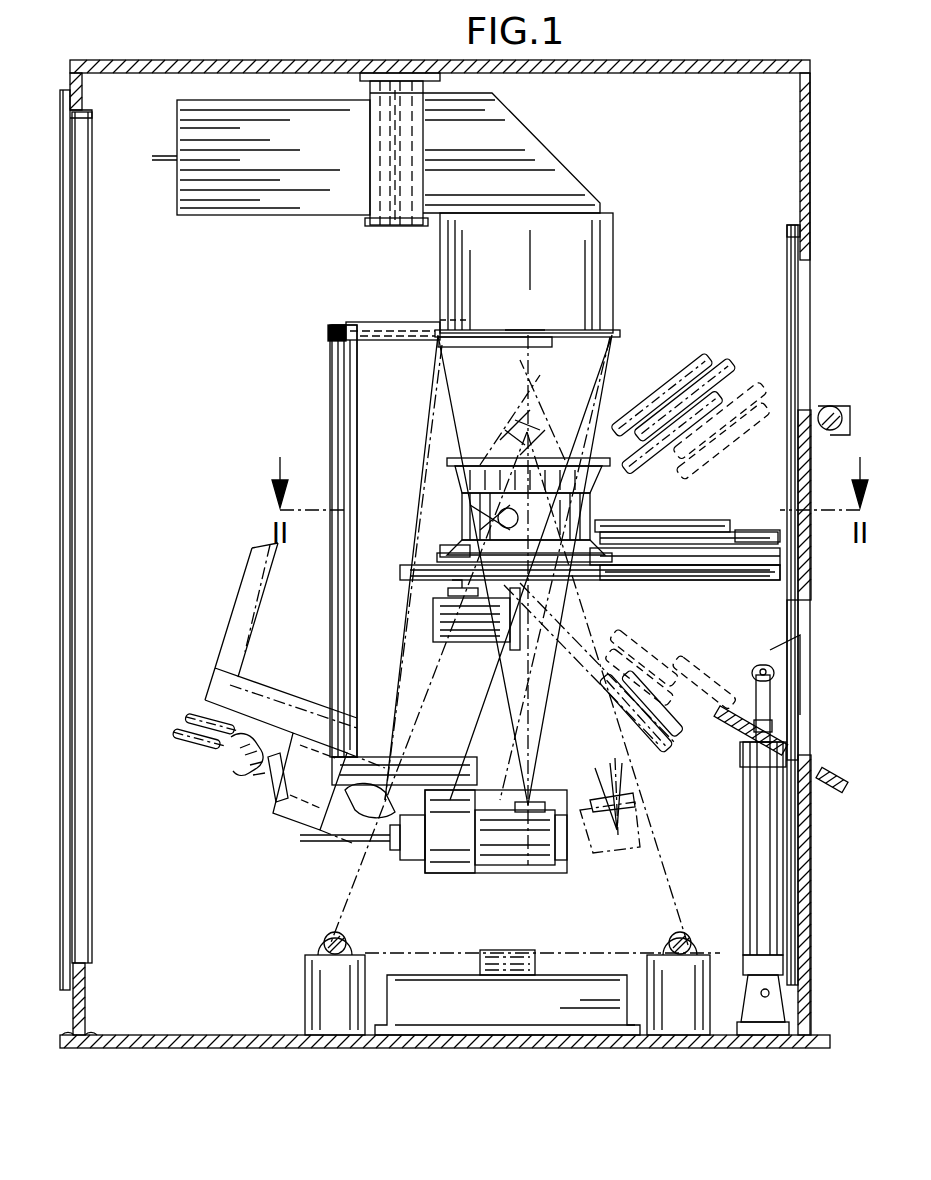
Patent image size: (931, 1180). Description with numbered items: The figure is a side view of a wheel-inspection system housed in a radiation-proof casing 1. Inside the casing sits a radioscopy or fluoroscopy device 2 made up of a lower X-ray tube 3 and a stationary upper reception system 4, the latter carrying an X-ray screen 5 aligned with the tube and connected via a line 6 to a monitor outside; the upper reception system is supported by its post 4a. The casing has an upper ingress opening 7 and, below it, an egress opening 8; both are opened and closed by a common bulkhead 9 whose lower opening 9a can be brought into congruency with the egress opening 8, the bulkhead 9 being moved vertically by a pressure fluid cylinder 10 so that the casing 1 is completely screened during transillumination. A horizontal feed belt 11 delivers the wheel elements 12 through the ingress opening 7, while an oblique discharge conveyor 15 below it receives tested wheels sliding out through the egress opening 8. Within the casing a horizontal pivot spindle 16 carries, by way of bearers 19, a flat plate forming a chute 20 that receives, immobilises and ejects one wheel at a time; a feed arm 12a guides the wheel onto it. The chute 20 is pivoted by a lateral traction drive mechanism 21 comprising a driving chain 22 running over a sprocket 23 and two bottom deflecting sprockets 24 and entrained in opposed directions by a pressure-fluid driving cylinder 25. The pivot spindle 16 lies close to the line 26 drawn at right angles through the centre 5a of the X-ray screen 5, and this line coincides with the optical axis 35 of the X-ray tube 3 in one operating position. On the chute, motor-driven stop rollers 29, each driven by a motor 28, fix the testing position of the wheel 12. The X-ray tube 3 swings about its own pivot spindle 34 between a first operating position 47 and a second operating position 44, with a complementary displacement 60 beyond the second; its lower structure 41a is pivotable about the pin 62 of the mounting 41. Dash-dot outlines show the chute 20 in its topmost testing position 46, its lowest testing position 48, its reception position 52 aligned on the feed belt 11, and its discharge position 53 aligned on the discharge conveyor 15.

The radiation-proof casing 1 is at (223, 61).
The radioscopy or fluoroscopy device 2 is at (550, 136).
The X-ray tube 3 is at (520, 870).
The reception system 4 is at (240, 158).
The vertical post 4a is at (333, 402).
The X-ray screen 5 is at (570, 320).
The centre of the X-ray screen 5a is at (530, 330).
The line 6 is at (163, 156).
The upper ingress opening 7 is at (806, 332).
The egress opening 8 is at (794, 690).
The bulkhead 9 is at (780, 585).
The lower opening 9a is at (795, 625).
The pressure fluid cylinder 10 is at (760, 810).
The feed belt 11 is at (832, 404).
The wheel element 12 is at (660, 525).
The feed arm 12a is at (520, 430).
The discharge conveyor 15 is at (830, 764).
The horizontal pivot spindle 16 is at (490, 515).
The bearer 19 is at (457, 477).
The chute 20 is at (650, 580).
The traction drive mechanism 21 is at (598, 957).
The driving chain 22 is at (352, 898).
The sprocket 23 is at (580, 590).
The bottom deflecting sprocket 24 is at (320, 942).
The driving cylinder 25 is at (515, 951).
The line at right angles 26 is at (532, 403).
The motor 28 is at (438, 613).
The stop roller 29 is at (442, 556).
The pivot spindle for the X-ray tube 34 is at (535, 330).
The optical axis 35 is at (550, 685).
The mounting 41 is at (320, 352).
The lower structure 41a is at (235, 607).
The second operating position 44 is at (505, 870).
The topmost testing position 46 is at (689, 348).
The first operating position 47 is at (263, 808).
The lowest testing position 48 is at (640, 748).
The reception position 52 is at (750, 402).
The discharge position 53 is at (684, 700).
The complementary pivotal displacement 60 is at (636, 858).
The pin 62 is at (326, 330).